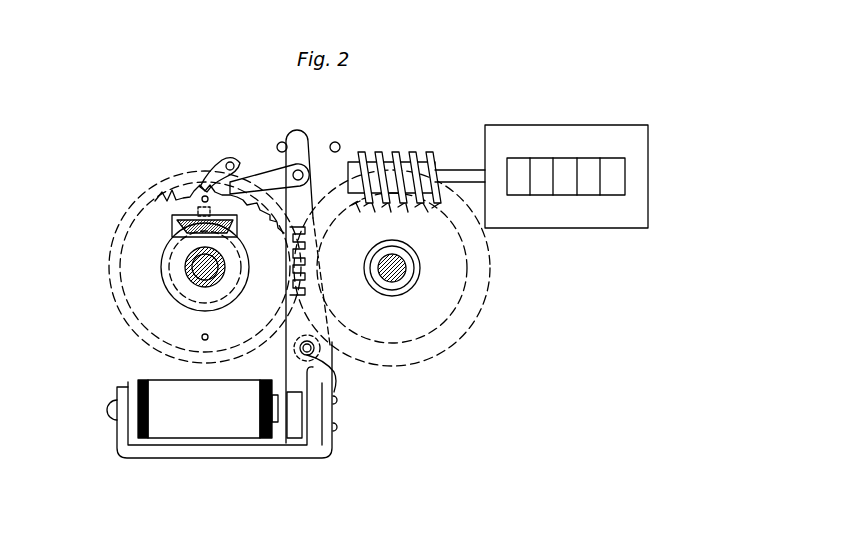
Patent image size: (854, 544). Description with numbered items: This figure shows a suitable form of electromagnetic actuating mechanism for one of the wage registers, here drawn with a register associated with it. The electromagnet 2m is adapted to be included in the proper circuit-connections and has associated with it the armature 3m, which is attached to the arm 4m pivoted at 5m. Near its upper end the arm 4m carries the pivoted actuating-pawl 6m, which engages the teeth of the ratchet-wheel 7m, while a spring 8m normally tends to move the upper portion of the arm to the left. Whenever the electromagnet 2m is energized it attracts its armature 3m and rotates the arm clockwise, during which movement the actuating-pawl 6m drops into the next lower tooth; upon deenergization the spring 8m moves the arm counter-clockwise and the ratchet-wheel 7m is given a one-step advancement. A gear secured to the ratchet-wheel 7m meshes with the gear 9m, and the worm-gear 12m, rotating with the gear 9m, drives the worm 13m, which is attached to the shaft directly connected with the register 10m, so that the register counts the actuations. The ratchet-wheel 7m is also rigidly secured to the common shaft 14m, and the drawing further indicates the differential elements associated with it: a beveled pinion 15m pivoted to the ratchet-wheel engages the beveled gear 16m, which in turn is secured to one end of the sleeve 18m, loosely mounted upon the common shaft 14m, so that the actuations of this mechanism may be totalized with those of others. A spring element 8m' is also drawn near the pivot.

The electromagnet 2m is at (210, 440).
The armature 3m is at (296, 422).
The arm 4m is at (322, 120).
The pivot 5m is at (312, 352).
The actuating-pawl 6m is at (258, 173).
The ratchet-wheel 7m is at (175, 183).
The spring 8m is at (213, 224).
The spring 8m' is at (351, 389).
The gear 9m is at (467, 322).
The register 10m is at (546, 133).
The worm-gear 12m is at (403, 343).
The worm 13m is at (412, 140).
The common shaft 14m is at (185, 268).
The beveled pinion 15m is at (172, 218).
The beveled gear 16m is at (170, 277).
The sleeve 18m is at (203, 283).